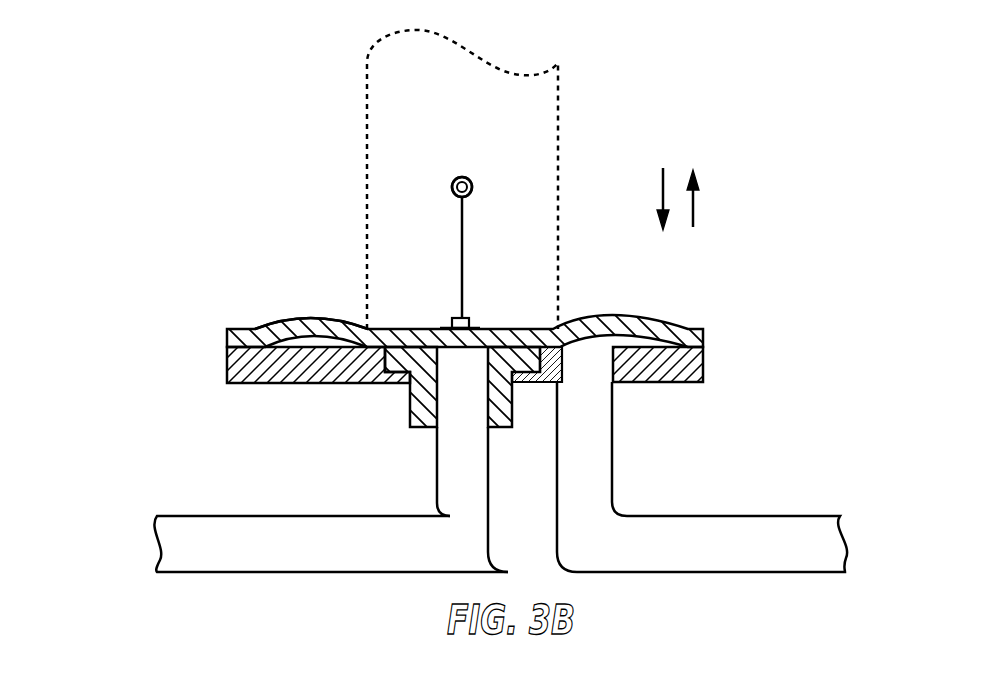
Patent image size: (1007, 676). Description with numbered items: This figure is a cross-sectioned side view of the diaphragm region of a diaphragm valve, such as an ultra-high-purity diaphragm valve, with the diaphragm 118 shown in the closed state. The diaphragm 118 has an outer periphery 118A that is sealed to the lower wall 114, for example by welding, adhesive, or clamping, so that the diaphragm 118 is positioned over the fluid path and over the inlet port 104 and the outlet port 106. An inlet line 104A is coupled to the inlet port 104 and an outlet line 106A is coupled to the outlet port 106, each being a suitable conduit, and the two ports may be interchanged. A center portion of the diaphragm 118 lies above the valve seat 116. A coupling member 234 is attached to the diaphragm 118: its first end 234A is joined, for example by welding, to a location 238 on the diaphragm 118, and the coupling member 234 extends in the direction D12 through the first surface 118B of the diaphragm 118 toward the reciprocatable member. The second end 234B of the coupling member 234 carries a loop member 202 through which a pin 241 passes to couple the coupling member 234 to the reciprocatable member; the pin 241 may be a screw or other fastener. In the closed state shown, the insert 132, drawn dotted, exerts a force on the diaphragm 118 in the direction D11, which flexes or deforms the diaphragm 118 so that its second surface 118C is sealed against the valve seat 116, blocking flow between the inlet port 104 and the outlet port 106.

The insert 132 is at (367, 124).
The diaphragm 118 is at (648, 310).
The first surface 118B is at (312, 315).
The outer periphery 118A is at (696, 362).
The second surface 118C is at (556, 352).
The lower wall 114 is at (325, 383).
The inlet port 104 is at (451, 405).
The inlet line 104A is at (145, 552).
The valve seat 116 is at (513, 393).
The outlet port 106 is at (585, 405).
The outlet line 106A is at (862, 550).
The coupling member 234 is at (450, 246).
The first end 234A is at (472, 318).
The second end 234B is at (473, 182).
The location 238 is at (450, 327).
The loop member 202 is at (461, 176).
The pin 241 is at (451, 184).
The direction D11 is at (660, 198).
The direction D12 is at (695, 203).